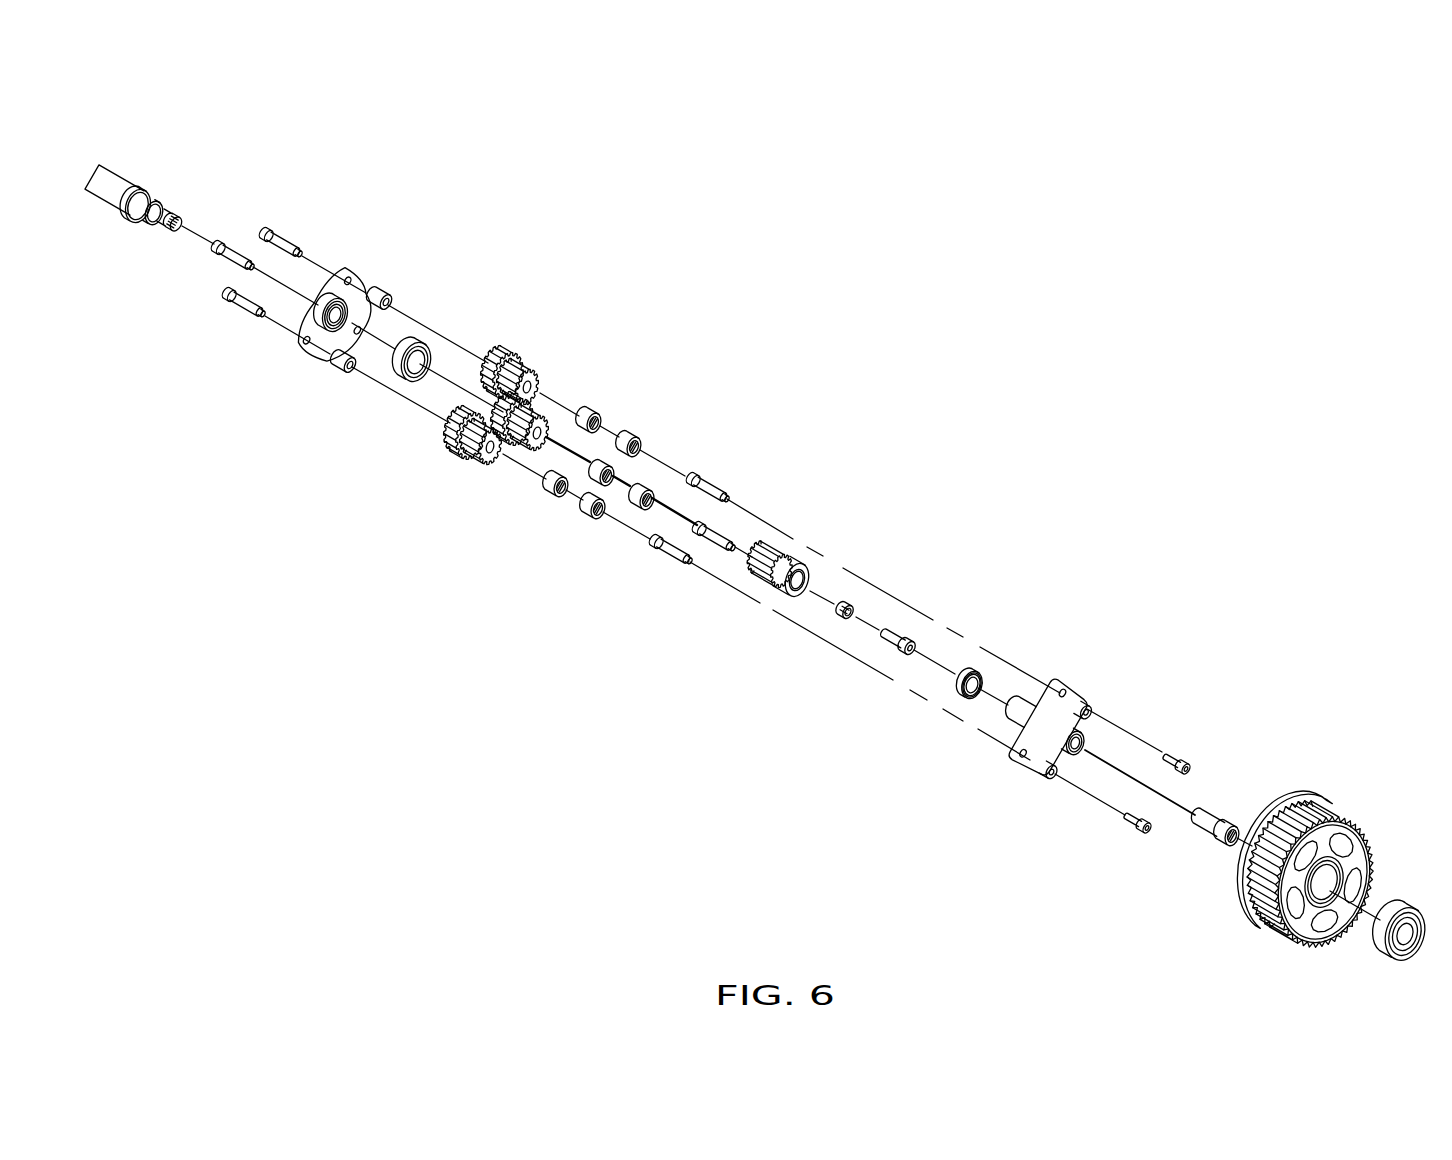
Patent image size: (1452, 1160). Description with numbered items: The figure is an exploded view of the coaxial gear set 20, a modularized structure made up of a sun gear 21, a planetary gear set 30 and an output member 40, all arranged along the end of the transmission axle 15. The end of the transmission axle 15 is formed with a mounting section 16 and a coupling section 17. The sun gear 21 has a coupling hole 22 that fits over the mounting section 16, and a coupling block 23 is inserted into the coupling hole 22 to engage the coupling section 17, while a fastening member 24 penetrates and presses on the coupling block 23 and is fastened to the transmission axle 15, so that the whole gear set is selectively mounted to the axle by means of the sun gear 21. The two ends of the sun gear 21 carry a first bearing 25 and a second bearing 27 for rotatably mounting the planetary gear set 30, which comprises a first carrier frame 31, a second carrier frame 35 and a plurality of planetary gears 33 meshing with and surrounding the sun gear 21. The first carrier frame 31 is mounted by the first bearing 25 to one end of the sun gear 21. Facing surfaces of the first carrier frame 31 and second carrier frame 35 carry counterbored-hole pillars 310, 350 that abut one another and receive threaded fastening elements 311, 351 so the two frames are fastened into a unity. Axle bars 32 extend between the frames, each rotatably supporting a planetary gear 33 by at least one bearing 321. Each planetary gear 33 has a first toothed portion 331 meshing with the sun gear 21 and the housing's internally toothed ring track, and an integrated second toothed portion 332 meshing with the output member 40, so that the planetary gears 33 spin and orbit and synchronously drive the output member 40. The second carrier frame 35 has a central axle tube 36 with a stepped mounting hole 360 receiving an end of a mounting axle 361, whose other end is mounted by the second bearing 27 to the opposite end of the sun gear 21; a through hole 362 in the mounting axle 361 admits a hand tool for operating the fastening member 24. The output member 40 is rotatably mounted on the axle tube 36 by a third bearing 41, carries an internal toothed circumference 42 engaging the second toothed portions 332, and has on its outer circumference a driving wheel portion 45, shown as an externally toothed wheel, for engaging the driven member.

The transmission axle 15 is at (118, 187).
The mounting section 16 is at (142, 222).
The coupling section 17 is at (178, 220).
The coaxial gear set 20 is at (855, 488).
The sun gear 21 is at (760, 591).
The coupling hole 22 is at (810, 580).
The coupling block 23 is at (840, 620).
The fastening member 24 is at (908, 640).
The first bearing 25 is at (398, 378).
The second bearing 27 is at (973, 667).
The planetary gear set 30 is at (568, 382).
The first carrier frame 31 is at (363, 285).
The counterbored-hole pillars 310 is at (368, 292).
The threaded fastening elements 311 is at (283, 238).
The axle bars 32 is at (663, 553).
The bearing 321 is at (548, 488).
The planetary gears 33 is at (520, 352).
The first toothed portion 331 is at (448, 453).
The second toothed portion 332 is at (470, 458).
The second carrier frame 35 is at (1068, 702).
The counterbored-hole pillars 350 is at (1017, 717).
The threaded fastening elements 351 is at (1177, 752).
The axle tube 36 is at (1060, 745).
The stepped mounting hole 360 is at (1088, 740).
The mounting axle 361 is at (1207, 833).
The through hole 362 is at (1233, 832).
The output member 40 is at (1330, 800).
The third bearing 41 is at (1380, 950).
The internal toothed circumference 42 is at (1297, 948).
The driving wheel portion 45 is at (1337, 817).